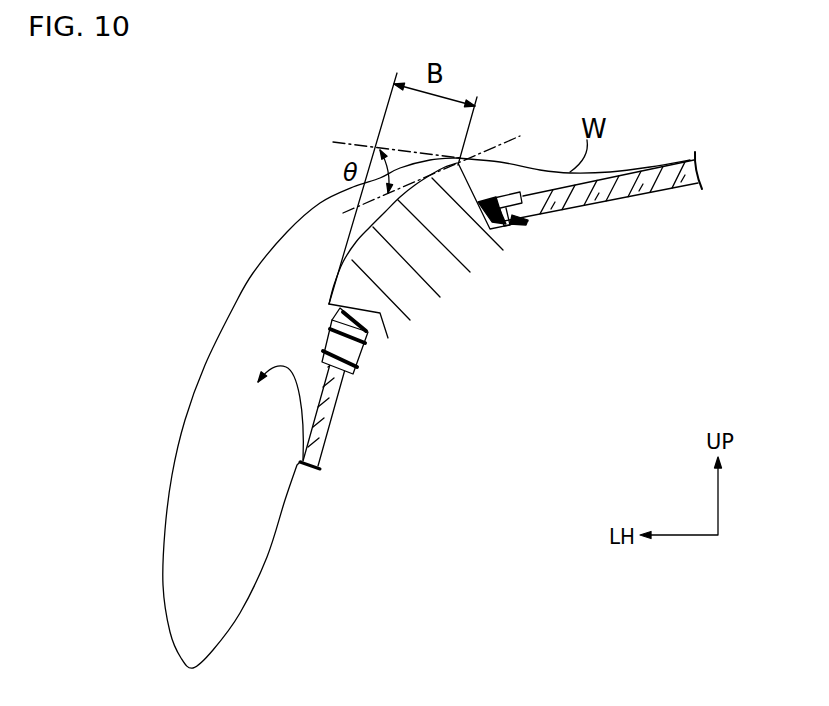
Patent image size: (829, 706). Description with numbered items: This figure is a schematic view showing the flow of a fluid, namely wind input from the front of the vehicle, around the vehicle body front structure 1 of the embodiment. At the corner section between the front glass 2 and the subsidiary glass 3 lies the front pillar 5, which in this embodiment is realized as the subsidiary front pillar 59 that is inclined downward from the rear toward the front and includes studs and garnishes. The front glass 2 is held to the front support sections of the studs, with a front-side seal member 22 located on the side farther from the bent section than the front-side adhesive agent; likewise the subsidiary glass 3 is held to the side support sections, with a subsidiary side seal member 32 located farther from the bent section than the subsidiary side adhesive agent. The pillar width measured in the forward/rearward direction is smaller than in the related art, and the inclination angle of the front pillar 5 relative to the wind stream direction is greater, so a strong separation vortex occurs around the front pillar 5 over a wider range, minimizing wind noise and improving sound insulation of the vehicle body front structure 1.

The vehicle body front structure 1 is at (669, 104).
The front glass 2 is at (613, 190).
The subsidiary glass 3 is at (322, 422).
The front pillar 5 is at (428, 272).
The front-side seal member 22 is at (513, 225).
The subsidiary side seal member 32 is at (355, 350).
The subsidiary front pillar 59 is at (430, 262).